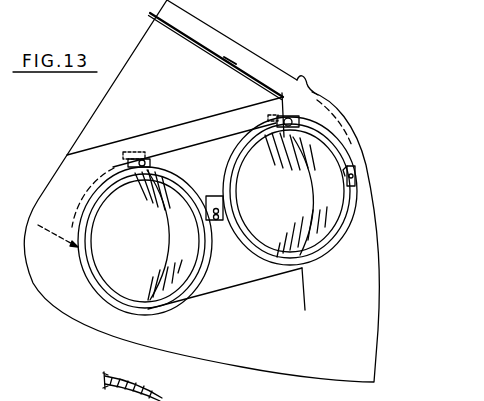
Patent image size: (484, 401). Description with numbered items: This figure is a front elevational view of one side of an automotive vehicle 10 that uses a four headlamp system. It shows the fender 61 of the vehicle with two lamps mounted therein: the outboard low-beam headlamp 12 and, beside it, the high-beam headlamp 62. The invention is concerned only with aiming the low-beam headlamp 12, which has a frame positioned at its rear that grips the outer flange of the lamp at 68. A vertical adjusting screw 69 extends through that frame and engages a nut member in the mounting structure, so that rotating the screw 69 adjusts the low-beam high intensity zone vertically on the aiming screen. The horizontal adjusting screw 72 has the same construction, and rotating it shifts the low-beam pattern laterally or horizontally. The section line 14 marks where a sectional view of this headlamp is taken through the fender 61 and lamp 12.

The automotive vehicle 10 is at (257, 43).
The low-beam headlamp 12 is at (342, 219).
The section line 14— 14 is at (307, 100).
The fender 61 is at (282, 70).
The high-beam headlamp 62 is at (115, 262).
The outer flange grip 68 is at (343, 156).
The vertical adjusting screw 69 is at (293, 121).
The horizontal adjusting screw 72 is at (228, 226).